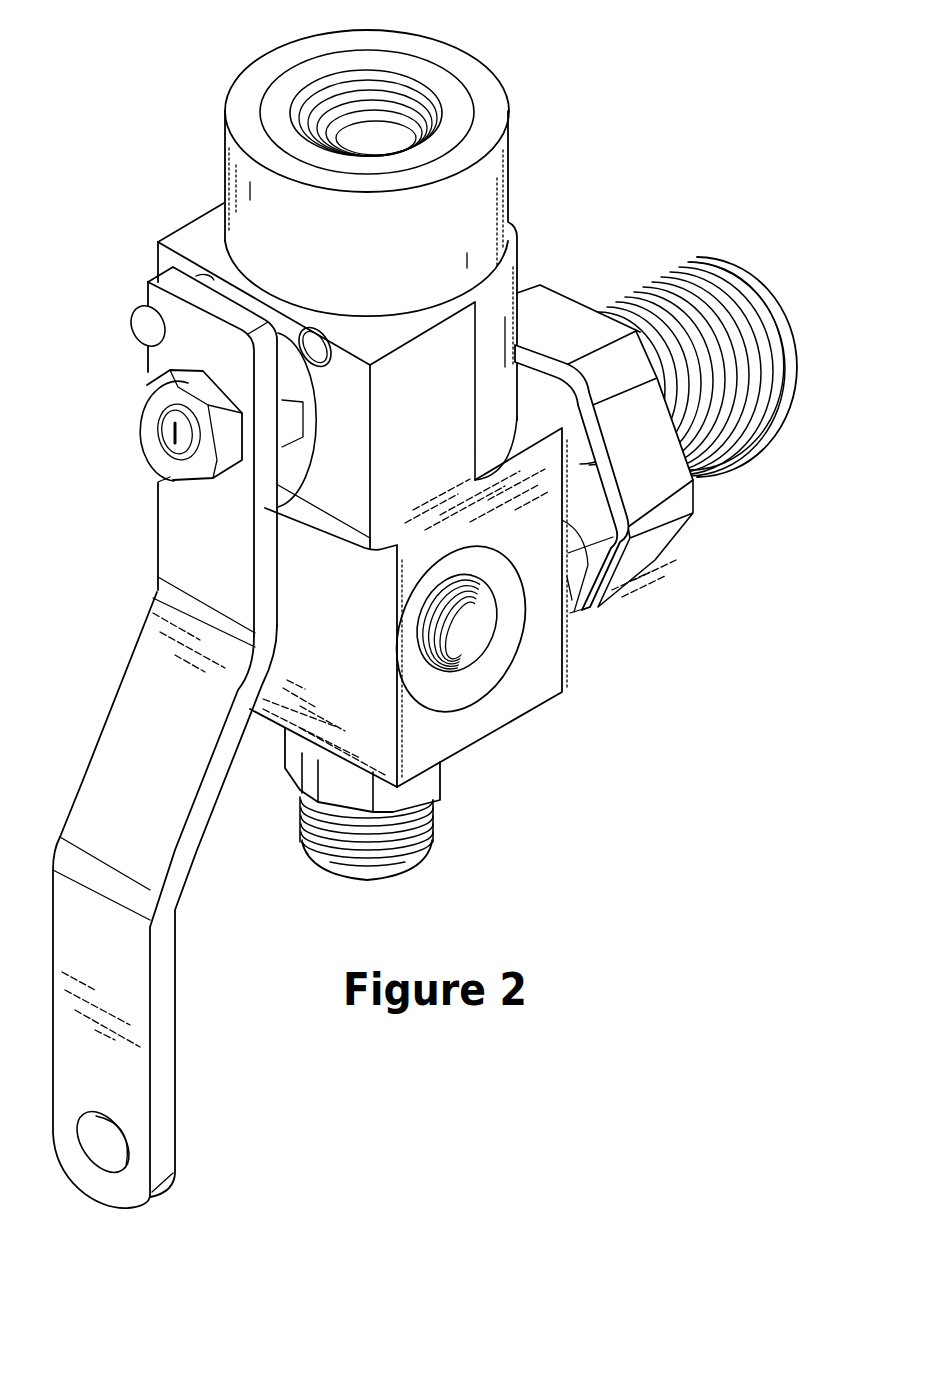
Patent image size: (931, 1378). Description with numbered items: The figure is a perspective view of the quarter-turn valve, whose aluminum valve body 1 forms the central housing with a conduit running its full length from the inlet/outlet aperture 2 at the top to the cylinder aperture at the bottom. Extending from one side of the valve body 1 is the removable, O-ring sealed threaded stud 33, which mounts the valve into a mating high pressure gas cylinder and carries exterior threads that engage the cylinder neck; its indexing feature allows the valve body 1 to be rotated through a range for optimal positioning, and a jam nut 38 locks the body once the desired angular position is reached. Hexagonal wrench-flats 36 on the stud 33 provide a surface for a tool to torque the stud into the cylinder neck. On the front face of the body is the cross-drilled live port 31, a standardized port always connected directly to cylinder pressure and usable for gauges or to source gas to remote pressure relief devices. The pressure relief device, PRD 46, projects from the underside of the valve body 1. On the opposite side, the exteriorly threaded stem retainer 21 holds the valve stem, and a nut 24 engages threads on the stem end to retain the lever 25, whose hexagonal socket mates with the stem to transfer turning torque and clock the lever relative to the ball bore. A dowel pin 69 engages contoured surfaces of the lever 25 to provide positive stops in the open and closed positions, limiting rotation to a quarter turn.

The valve body 1 is at (480, 197).
The inlet/outlet aperture 2 is at (403, 92).
The stem retainer 21 is at (297, 504).
The nut 24 is at (147, 437).
The lever 25 is at (141, 706).
The live port 31 is at (467, 657).
The stud 33 is at (733, 425).
The wrench-flats 36 is at (657, 560).
The jam nut 38 is at (570, 602).
The PRD 46 is at (400, 856).
The dowel pin 69 is at (131, 329).